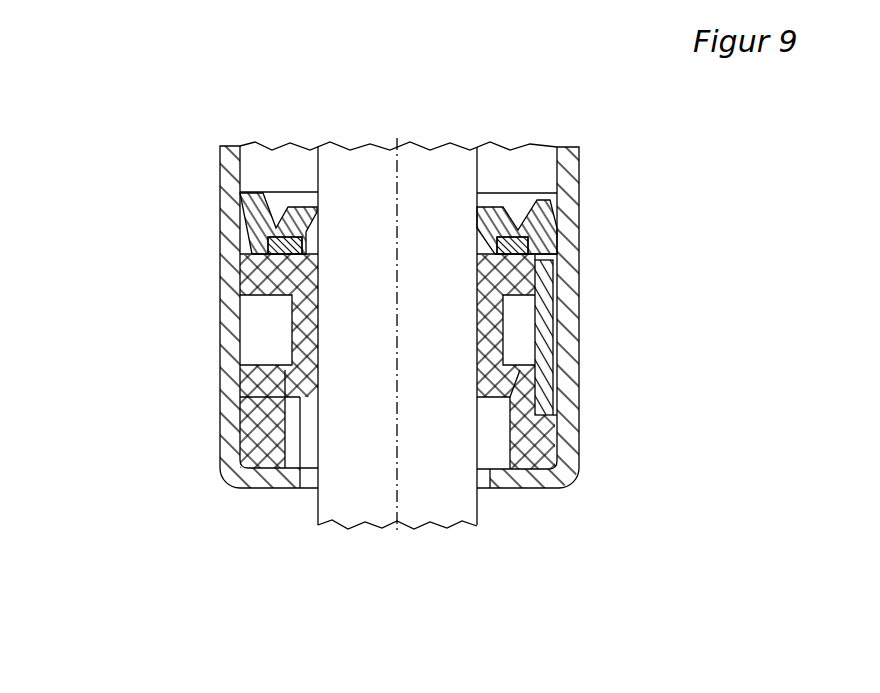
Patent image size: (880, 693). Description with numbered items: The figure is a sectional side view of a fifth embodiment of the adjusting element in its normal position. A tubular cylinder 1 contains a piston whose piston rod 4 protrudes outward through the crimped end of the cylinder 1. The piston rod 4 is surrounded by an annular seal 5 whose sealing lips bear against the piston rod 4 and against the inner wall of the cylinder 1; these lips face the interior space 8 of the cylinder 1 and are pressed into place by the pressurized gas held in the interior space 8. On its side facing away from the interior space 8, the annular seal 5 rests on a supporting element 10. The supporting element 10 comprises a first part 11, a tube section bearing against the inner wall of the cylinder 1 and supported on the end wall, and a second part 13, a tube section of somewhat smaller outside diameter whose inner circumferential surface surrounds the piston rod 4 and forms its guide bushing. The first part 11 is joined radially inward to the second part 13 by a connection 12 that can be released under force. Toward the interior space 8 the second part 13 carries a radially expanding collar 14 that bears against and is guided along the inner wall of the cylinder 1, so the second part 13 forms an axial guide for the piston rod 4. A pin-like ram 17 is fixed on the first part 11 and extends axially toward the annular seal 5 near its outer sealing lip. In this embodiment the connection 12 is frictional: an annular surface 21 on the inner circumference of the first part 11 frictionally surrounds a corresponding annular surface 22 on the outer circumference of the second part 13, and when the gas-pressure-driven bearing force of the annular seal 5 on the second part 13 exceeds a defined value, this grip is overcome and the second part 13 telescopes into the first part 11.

The cylinder 1 is at (565, 438).
The piston rod 4 is at (430, 490).
The annular seal 5 is at (195, 213).
The interior space 8 is at (260, 168).
The supporting element 10 is at (180, 362).
The first part 11 is at (238, 441).
The connection 12 is at (260, 353).
The second part 13 is at (300, 332).
The collar 14 is at (258, 270).
The ram 17 is at (545, 353).
The annular surface 21 is at (292, 375).
The annular surface 22 is at (514, 372).